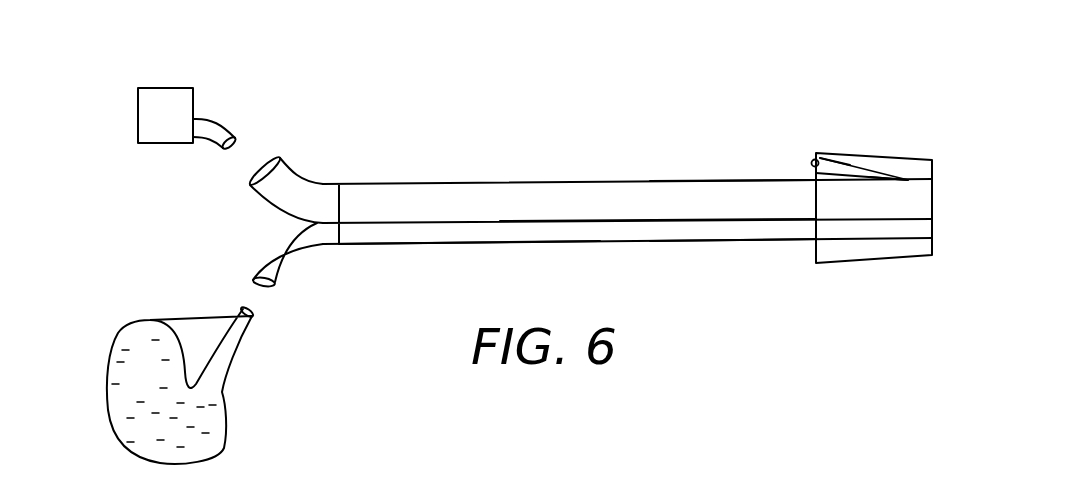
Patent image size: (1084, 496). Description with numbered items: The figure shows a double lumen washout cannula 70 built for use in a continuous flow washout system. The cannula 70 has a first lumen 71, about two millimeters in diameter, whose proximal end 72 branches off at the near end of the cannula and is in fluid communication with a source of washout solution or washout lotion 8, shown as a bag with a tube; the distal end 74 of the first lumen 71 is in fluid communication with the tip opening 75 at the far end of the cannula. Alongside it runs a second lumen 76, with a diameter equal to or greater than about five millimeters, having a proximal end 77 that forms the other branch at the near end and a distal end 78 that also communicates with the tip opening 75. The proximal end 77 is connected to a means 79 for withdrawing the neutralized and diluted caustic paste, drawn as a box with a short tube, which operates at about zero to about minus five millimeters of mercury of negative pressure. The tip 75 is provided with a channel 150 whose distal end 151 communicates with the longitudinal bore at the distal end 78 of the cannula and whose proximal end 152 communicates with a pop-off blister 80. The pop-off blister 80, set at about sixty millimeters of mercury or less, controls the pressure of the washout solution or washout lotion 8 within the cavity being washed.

The double lumen washout cannula 70 is at (480, 170).
The first lumen 71 is at (433, 228).
The proximal end 72 is at (347, 237).
The distal end 74 is at (782, 235).
The tip opening 75 is at (933, 227).
The second lumen 76 is at (575, 200).
The proximal end 77 is at (347, 183).
The distal end 78 is at (763, 193).
The means for withdrawing the neutralized and diluted caustic paste 79 is at (158, 100).
The pop-off blister 80 is at (812, 163).
The channel 150 is at (858, 168).
The distal end 151 is at (893, 180).
The proximal end 152 is at (820, 160).
The washout solution or washout lotion 8 is at (150, 385).